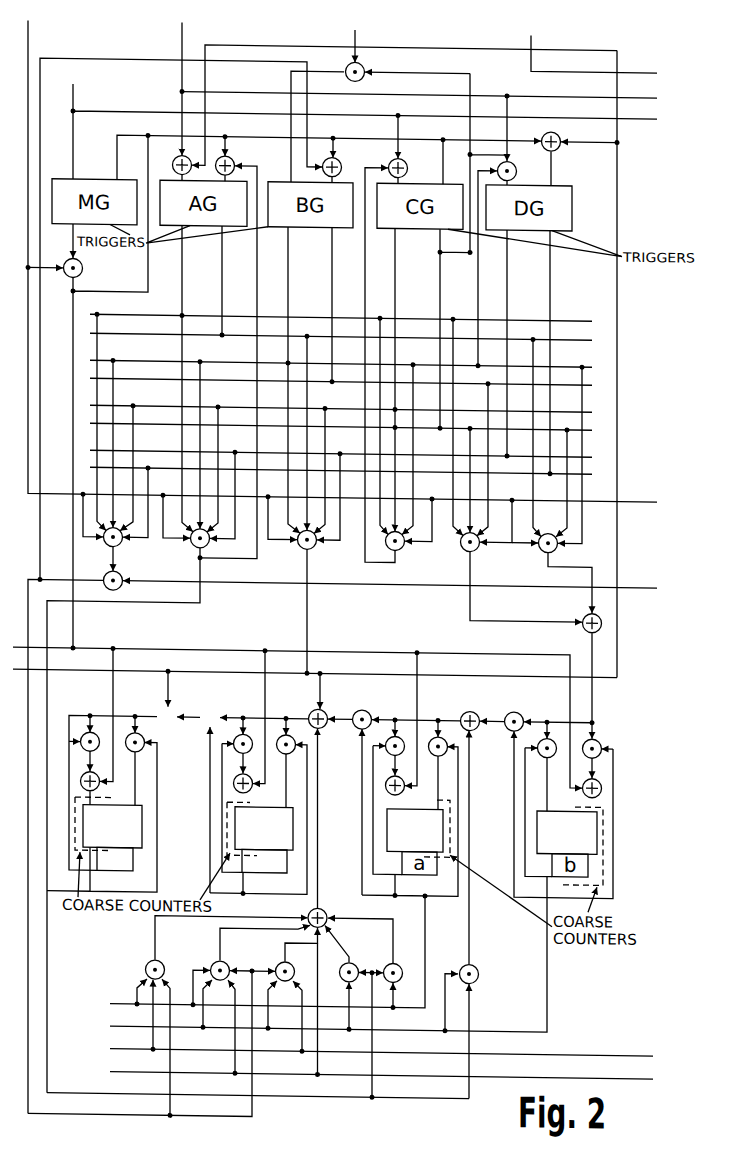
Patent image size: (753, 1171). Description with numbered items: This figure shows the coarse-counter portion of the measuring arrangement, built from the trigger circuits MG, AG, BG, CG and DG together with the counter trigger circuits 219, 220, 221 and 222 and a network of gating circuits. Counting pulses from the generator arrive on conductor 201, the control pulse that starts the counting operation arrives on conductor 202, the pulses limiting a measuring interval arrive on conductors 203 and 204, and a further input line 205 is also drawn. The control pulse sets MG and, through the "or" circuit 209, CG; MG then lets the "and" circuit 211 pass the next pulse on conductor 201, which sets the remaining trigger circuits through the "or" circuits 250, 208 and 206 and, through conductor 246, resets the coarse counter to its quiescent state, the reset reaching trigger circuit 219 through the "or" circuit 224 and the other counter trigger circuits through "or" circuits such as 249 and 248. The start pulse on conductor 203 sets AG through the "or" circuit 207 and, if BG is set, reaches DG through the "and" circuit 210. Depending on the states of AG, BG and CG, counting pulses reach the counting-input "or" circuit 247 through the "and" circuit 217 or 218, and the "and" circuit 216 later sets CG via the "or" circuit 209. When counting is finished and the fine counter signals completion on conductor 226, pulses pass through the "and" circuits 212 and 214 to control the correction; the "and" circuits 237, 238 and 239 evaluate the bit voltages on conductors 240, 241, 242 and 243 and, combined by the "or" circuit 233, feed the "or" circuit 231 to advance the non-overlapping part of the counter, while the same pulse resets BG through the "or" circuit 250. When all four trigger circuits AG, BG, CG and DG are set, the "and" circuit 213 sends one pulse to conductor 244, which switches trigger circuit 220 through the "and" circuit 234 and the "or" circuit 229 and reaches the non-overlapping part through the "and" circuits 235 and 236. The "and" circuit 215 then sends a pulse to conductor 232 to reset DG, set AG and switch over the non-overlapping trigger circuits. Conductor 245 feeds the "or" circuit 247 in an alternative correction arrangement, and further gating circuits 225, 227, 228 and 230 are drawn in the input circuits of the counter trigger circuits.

The conductor 201 is at (342, 261).
The conductor 202 is at (365, 135).
The conductor 203 is at (185, 64).
The conductor 204 is at (368, 54).
The input line 205 is at (594, 50).
The "or" circuit 206 is at (566, 151).
The "or" circuit 207 is at (176, 156).
The "or" circuit 208 is at (232, 157).
The "or" circuit 209 is at (383, 159).
The "and" circuit 210 is at (524, 170).
The "and" circuit 211 is at (71, 252).
The "and" circuit 212 is at (123, 545).
The "and" circuit 213 is at (192, 546).
The "and" circuit 214 is at (103, 578).
The "and" circuit 215 is at (316, 545).
The "and" circuit 216 is at (403, 545).
The "and" circuit 217 is at (462, 546).
The "and" circuit 218 is at (558, 546).
The trigger circuit 219 is at (567, 832).
The trigger circuit 220 is at (415, 830).
The trigger circuit 221 is at (264, 828).
The coarse counter 222 is at (112, 826).
The "or" circuit 224 is at (603, 782).
The AND gate 225 is at (598, 737).
The conductor 226 is at (526, 587).
The AND gate 227 is at (549, 730).
The AND gate 228 is at (514, 710).
The "or" circuit 229 is at (471, 710).
The AND gate 230 is at (361, 707).
The "or" circuit 231 is at (318, 705).
The conductor 232 is at (340, 672).
The "or" circuit 233 is at (327, 898).
The "and" circuit 234 is at (487, 859).
The "and" circuit 235 is at (377, 950).
The "and" circuit 236 is at (355, 954).
The "and" circuit 237 is at (284, 954).
The "and" circuit 238 is at (246, 953).
The "and" circuit 239 is at (211, 948).
The conductor 240 is at (249, 956).
The conductor 241 is at (310, 958).
The conductor 242 is at (363, 1053).
The conductor 243 is at (363, 1077).
The conductor 244 is at (258, 1109).
The conductor 245 is at (140, 1055).
The conductor 246 is at (297, 706).
The "or" circuit 247 is at (580, 614).
The "or" circuit 248 is at (403, 789).
The "or" circuit 249 is at (253, 786).
The "or" circuit 250 is at (338, 153).